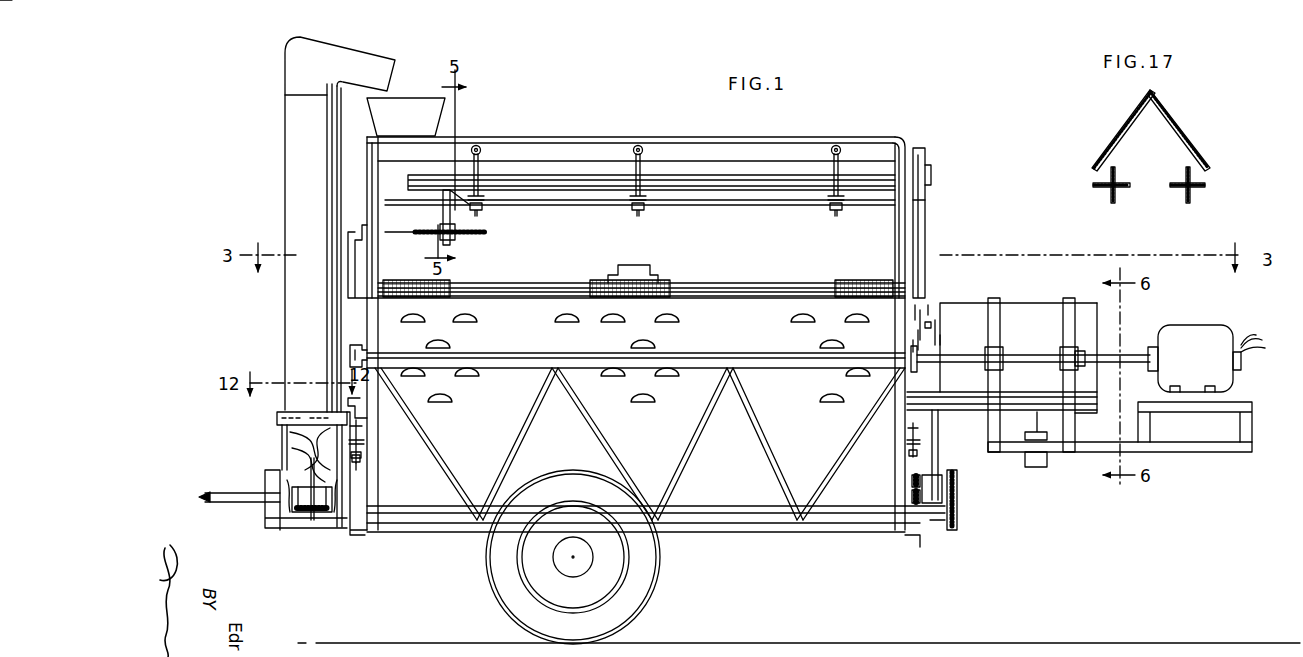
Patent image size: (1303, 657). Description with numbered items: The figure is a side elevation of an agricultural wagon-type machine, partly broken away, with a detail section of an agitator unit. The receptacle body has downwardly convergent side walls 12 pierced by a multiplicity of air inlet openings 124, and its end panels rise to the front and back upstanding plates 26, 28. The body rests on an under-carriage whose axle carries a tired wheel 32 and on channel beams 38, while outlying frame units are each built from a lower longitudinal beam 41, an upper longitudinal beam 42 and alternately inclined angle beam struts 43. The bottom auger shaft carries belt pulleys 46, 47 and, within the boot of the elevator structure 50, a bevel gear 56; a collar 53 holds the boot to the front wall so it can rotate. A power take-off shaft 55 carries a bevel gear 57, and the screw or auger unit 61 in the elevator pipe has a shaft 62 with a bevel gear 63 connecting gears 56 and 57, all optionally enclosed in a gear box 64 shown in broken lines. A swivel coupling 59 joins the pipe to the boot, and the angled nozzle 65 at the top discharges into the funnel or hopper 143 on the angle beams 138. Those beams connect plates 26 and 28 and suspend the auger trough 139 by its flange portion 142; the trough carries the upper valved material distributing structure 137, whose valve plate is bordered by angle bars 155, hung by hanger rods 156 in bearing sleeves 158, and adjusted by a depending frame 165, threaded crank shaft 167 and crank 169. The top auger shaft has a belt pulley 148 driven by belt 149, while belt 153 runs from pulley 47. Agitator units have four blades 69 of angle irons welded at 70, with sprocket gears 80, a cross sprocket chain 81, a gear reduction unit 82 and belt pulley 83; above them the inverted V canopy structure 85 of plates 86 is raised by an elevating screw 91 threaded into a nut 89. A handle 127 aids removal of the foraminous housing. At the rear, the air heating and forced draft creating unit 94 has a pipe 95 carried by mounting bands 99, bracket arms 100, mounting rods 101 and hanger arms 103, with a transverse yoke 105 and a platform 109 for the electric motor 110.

In FIG. 1, the side walls 12 is at (782, 298).
In FIG. 1, the front upstanding plate 26 is at (370, 167).
In FIG. 1, the back upstanding plate 28 is at (912, 144).
In FIG. 1, the tired wheel 32 is at (512, 588).
In FIG. 1, the channel beams 38 is at (752, 514).
In FIG. 1, the lower longitudinal beam 41 is at (851, 535).
In FIG. 1, the upper longitudinal beam 42 is at (806, 371).
In FIG. 1, the angle beam struts 43 is at (441, 463).
In FIG. 1, the belt pulley 46 is at (957, 524).
In FIG. 1, the belt pulley 47 is at (925, 527).
In FIG. 1, the elevator structure 50 is at (284, 164).
In FIG. 1, the collar 53 is at (360, 540).
In FIG. 1, the power take-off shaft 55 is at (216, 491).
In FIG. 1, the bevel gear 56 is at (338, 508).
In FIG. 1, the bevel gear 57 is at (297, 510).
In FIG. 1, the swivel coupling 59 is at (278, 420).
In FIG. 1, the screw or auger unit 61 is at (298, 443).
In FIG. 1, the shaft 62 is at (310, 486).
In FIG. 1, the bevel gear 63 is at (324, 514).
In FIG. 1, the gear box 64 is at (265, 521).
In FIG. 1, the angled nozzle 65 is at (300, 70).
In FIG. 17, the blades 69 is at (1185, 173).
In FIG. 17, the welded edges 70 is at (1192, 192).
In FIG. 1, the sprocket gears 80 is at (910, 496).
In FIG. 1, the cross sprocket chain 81 is at (910, 478).
In FIG. 1, the gear reduction unit 82 is at (944, 484).
In FIG. 1, the belt pulley 83 is at (959, 500).
In FIG. 17, the canopy structure 85 is at (1187, 132).
In FIG. 17, the plates or sections 86 is at (1123, 128).
In FIG. 1, the threaded nut 89 is at (361, 453).
In FIG. 1, the elevating screw 91 is at (360, 444).
In FIG. 1, the air heating and forced draft creating unit 94 is at (1090, 305).
In FIG. 1, the pipe or tube 95 is at (960, 307).
In FIG. 1, the mounting bands 99 is at (1064, 324).
In FIG. 1, the bracket arms 100 is at (996, 367).
In FIG. 1, the mounting rods 101 is at (1025, 355).
In FIG. 1, the hanger arms 103 is at (1072, 381).
In FIG. 1, the transverse yoke 105 is at (1040, 462).
In FIG. 1, the platform 109 is at (1221, 411).
In FIG. 1, the electric motor 110 is at (1193, 334).
In FIG. 1, the air inlet openings 124 is at (472, 319).
In FIG. 1, the handle 127 is at (655, 266).
In FIG. 1, the upper valved material distributing structure 137 is at (606, 203).
In FIG. 1, the angle beams 138 is at (590, 152).
In FIG. 1, the auger trough 139 is at (391, 178).
In FIG. 1, the flange portion 142 is at (527, 140).
In FIG. 1, the funnel or hopper 143 is at (428, 121).
In FIG. 1, the belt pulley 148 is at (932, 163).
In FIG. 1, the belt 149 is at (921, 224).
In FIG. 1, the belt 153 is at (935, 458).
In FIG. 1, the angle bars 155 is at (790, 203).
In FIG. 1, the hanger rods 156 is at (651, 163).
In FIG. 1, the bearing sleeves 158 is at (838, 152).
In FIG. 1, the depending frame 165 is at (453, 219).
In FIG. 1, the threaded crank shaft 167 is at (422, 234).
In FIG. 1, the crank 169 is at (349, 279).